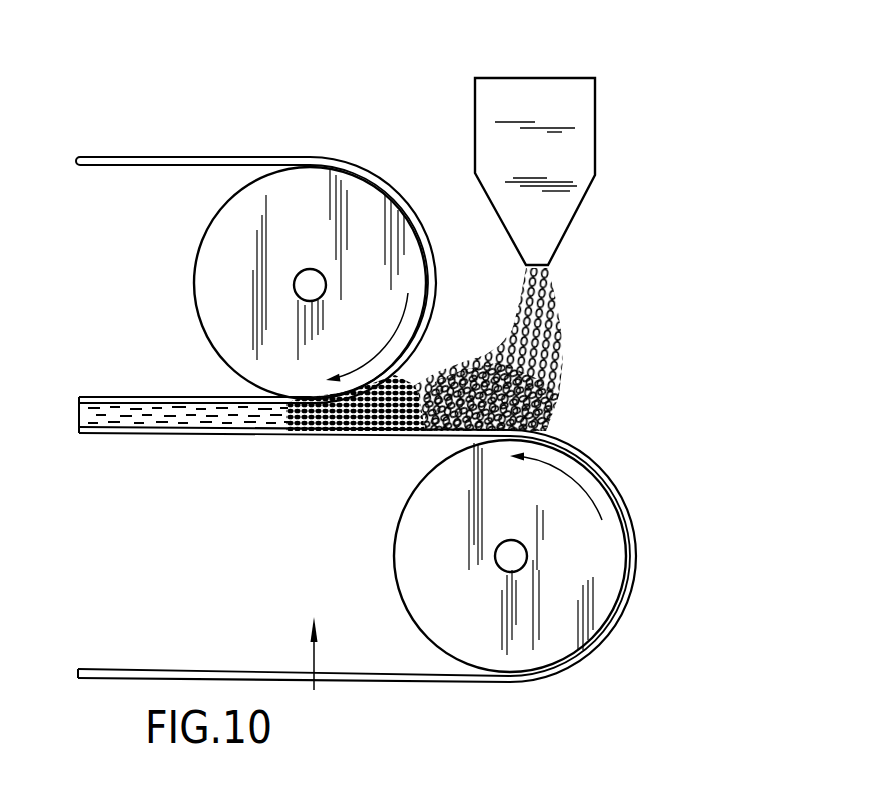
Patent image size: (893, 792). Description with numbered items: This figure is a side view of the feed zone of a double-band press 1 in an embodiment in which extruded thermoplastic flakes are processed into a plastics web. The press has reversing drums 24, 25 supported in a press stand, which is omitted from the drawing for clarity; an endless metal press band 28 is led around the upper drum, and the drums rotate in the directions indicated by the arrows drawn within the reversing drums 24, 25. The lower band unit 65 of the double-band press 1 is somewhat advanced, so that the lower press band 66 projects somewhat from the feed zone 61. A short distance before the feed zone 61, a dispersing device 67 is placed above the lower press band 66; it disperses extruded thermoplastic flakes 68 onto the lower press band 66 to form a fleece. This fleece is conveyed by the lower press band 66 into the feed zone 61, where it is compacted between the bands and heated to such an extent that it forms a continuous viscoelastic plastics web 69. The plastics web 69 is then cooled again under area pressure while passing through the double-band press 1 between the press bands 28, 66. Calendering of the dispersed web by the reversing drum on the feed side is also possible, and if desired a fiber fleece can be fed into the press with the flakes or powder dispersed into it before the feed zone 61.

The double-band press 1 is at (96, 209).
The reversing drum 24 is at (212, 288).
The reversing drum 25 is at (582, 525).
The press band 28 is at (170, 160).
The feed zone 61 is at (425, 360).
The lower band unit 65 is at (332, 665).
The lower press band 66 is at (608, 623).
The dispersing device 67 is at (585, 148).
The extruded thermoplastic flakes 68 is at (555, 378).
The plastics web 69 is at (167, 418).